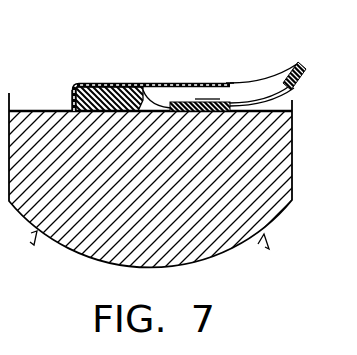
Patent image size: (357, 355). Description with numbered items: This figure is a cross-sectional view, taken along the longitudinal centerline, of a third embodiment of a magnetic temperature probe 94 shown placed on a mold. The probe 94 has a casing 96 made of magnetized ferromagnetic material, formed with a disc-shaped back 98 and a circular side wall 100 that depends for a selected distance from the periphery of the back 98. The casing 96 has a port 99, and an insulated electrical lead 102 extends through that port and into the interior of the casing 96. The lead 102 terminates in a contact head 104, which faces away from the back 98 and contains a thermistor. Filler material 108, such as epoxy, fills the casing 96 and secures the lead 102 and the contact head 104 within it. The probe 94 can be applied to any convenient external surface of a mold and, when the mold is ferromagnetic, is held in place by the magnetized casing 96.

The temperature probe 94 is at (210, 84).
The casing 96 is at (142, 84).
The disc-shaped back 98 is at (187, 85).
The port 99 is at (231, 86).
The circular side wall 100 is at (72, 96).
The insulated electrical lead 102 is at (270, 82).
The contact head 104 is at (155, 103).
The filler material 108 is at (104, 87).